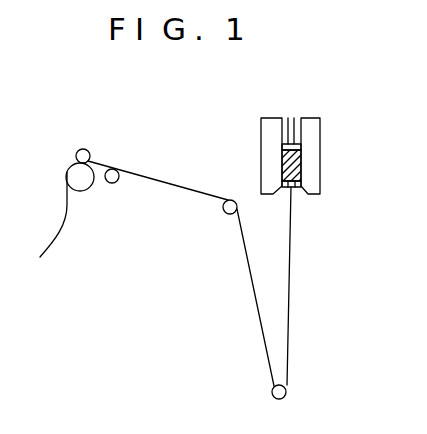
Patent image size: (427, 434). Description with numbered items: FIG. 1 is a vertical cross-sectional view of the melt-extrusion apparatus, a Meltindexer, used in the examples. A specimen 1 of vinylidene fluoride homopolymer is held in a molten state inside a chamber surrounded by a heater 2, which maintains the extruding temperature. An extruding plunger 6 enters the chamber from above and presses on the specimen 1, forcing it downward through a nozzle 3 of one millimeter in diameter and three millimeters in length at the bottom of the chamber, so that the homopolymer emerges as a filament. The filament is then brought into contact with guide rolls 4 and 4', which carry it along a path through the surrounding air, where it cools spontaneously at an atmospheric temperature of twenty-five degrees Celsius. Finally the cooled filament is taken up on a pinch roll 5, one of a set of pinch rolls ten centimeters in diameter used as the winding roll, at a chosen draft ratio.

The specimen in a molten state 1 is at (301, 160).
The heater 2 is at (265, 136).
The nozzle 3 is at (295, 188).
The guide roll 4 is at (297, 403).
The guide roll 4' is at (168, 212).
The pinch roll 5 is at (80, 177).
The extruding plunger 6 is at (292, 118).